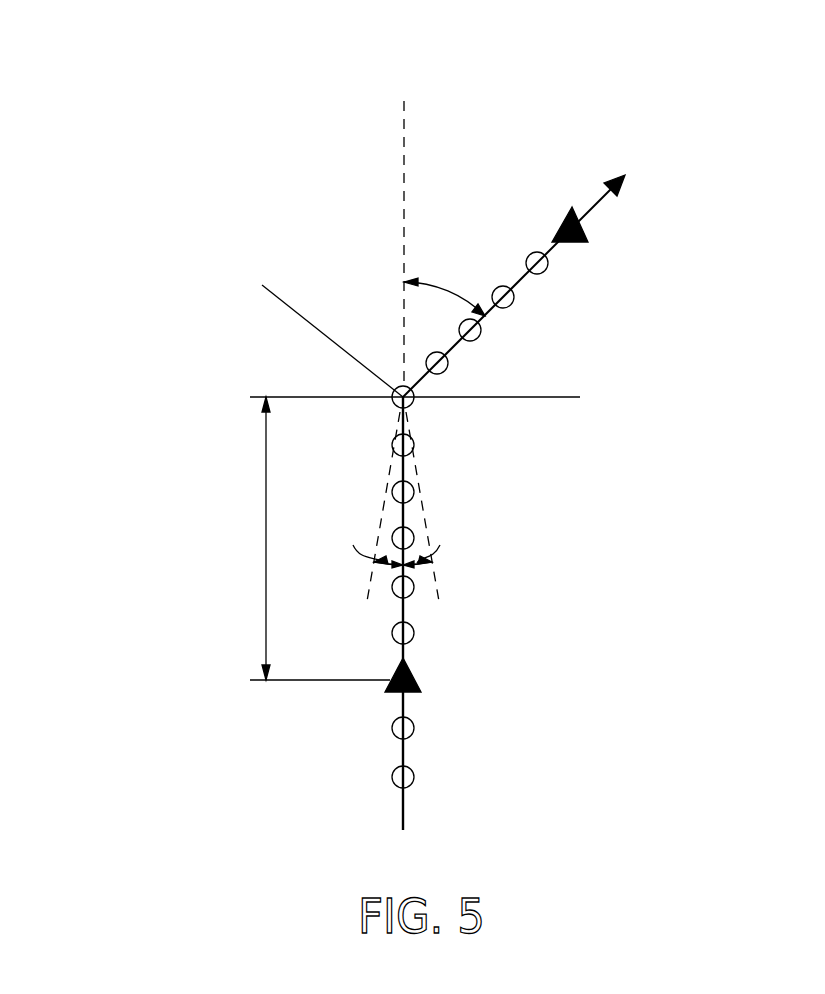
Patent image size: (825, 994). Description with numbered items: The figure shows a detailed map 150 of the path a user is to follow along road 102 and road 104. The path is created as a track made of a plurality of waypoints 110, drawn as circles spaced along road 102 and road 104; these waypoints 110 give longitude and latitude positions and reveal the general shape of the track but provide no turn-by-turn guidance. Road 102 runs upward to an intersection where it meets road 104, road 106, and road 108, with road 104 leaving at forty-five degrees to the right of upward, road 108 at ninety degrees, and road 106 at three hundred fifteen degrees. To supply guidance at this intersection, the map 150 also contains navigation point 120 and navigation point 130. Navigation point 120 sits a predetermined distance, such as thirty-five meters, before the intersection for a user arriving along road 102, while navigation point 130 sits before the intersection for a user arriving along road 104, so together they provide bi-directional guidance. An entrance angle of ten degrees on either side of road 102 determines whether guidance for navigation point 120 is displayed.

The map 150 is at (692, 138).
The road 102 is at (404, 815).
The road 104 is at (600, 203).
The road 106 is at (293, 308).
The road 108 is at (553, 398).
The waypoints 110 is at (545, 270).
The navigation point 120 is at (415, 680).
The navigation point 130 is at (560, 223).